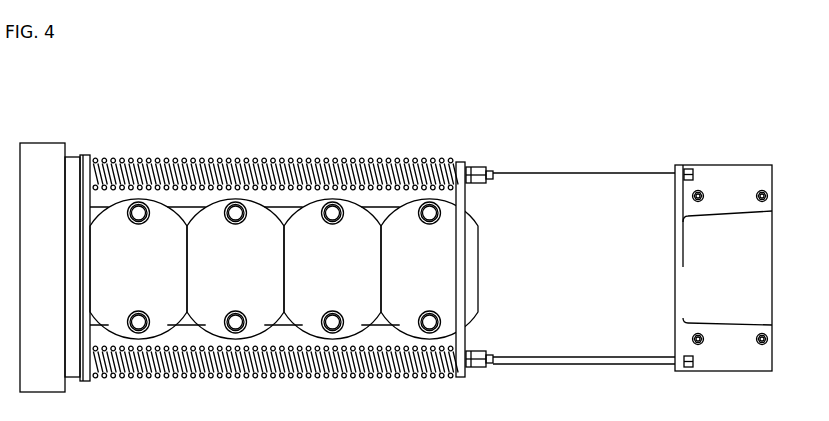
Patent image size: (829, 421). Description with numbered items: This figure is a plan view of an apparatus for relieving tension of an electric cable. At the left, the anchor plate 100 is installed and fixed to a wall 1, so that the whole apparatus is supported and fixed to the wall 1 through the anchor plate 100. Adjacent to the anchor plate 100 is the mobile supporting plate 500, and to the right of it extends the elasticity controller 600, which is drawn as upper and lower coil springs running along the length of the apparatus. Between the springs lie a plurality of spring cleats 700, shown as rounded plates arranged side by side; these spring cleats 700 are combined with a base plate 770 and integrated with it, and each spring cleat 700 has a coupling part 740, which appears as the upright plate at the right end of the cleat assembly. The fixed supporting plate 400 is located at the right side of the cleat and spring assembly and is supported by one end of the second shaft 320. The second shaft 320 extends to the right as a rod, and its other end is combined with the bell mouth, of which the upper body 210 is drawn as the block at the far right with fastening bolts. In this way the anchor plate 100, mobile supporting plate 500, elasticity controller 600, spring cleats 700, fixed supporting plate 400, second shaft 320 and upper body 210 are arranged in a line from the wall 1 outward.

The wall 1 is at (37, 150).
The anchor plate 100 is at (71, 160).
The mobile supporting plate 500 is at (85, 157).
The elasticity controller 600 is at (275, 231).
The spring cleat 700 is at (212, 221).
The base plate 770 is at (298, 160).
The coupling part 740 is at (437, 160).
The second shaft 320 is at (529, 176).
The fixed supporting plate 400 is at (463, 200).
The upper body 210 is at (725, 178).